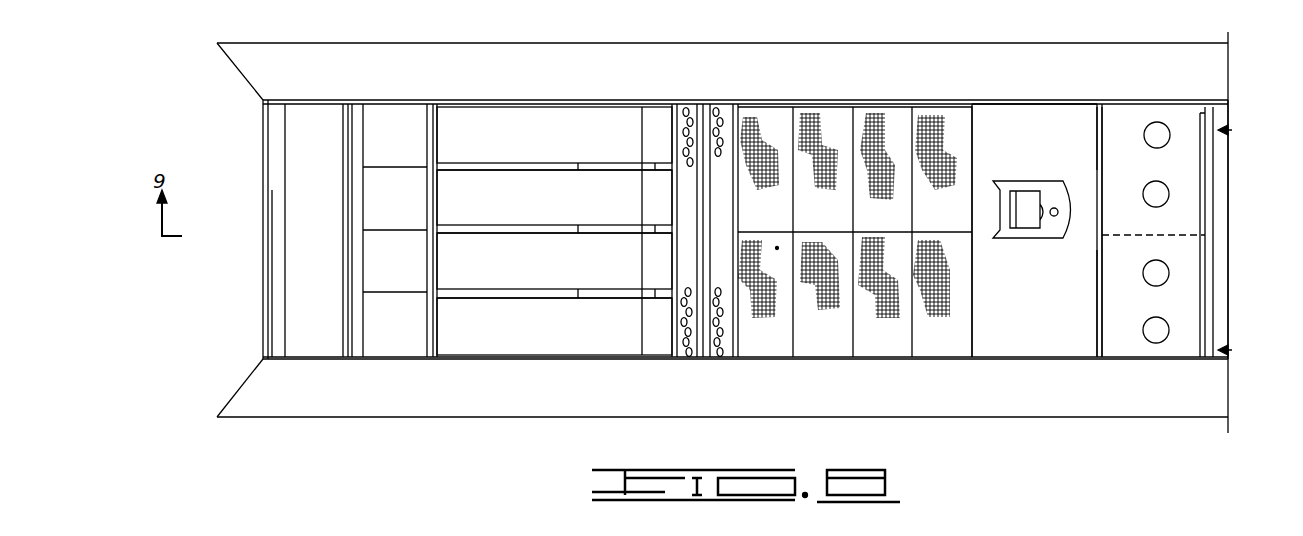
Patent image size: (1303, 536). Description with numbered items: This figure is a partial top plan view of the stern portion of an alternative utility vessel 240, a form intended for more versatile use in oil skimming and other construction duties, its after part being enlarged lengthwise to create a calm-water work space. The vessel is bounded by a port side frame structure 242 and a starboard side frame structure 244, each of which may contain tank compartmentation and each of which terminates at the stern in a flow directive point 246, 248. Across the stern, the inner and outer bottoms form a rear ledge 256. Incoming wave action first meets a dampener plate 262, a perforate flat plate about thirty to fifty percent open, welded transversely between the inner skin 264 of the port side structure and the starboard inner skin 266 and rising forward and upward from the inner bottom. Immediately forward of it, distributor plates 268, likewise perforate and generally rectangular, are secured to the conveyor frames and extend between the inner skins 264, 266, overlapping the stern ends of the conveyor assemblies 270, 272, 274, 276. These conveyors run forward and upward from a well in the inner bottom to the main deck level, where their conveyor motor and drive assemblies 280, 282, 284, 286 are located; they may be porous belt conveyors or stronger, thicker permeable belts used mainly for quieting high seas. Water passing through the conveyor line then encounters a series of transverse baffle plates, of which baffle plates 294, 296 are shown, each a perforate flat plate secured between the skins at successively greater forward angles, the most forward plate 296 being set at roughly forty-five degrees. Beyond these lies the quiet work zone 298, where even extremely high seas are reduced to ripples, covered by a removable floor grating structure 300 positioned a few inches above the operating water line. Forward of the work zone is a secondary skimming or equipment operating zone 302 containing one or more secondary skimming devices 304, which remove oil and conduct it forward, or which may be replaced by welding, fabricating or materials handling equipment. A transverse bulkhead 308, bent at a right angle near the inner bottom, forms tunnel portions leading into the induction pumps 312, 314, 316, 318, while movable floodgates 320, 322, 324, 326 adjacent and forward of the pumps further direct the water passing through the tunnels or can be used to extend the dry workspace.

The utility vessel 240 is at (1137, 17).
The port side frame structure 242 is at (350, 58).
The starboard side frame structure 244 is at (353, 392).
The flow directive point 246 is at (217, 50).
The flow directive point 248 is at (217, 408).
The rear ledge 256 is at (267, 240).
The dampener plate 262 is at (302, 278).
The inner skin 264 is at (413, 110).
The starboard inner skin 266 is at (402, 360).
The distributor plate 268 is at (380, 133).
The conveyor assembly 270 is at (516, 145).
The conveyor assembly 272 is at (511, 213).
The conveyor assembly 274 is at (511, 274).
The conveyor assembly 276 is at (511, 342).
The conveyor motor and drive assembly 280 is at (653, 128).
The conveyor motor and drive assembly 282 is at (650, 198).
The conveyor motor and drive assembly 284 is at (650, 258).
The conveyor motor and drive assembly 286 is at (648, 322).
The transverse baffle plate 294 is at (690, 103).
The transverse baffle plate 296 is at (718, 103).
The work zone 298 is at (905, 226).
The floor grating structure 300 is at (887, 117).
The secondary skimming or equipment operating zone 302 is at (1042, 294).
The secondary skimming device 304 is at (1058, 187).
The transverse bulkhead 308 is at (1100, 173).
The induction pump 312 is at (1147, 127).
The induction pump 314 is at (1153, 206).
The induction pump 316 is at (1150, 262).
The induction pump 318 is at (1153, 340).
The movable floodgate 320 is at (1210, 150).
The movable floodgate 322 is at (1203, 296).
The movable floodgate 324 is at (1097, 133).
The movable floodgate 326 is at (1097, 310).